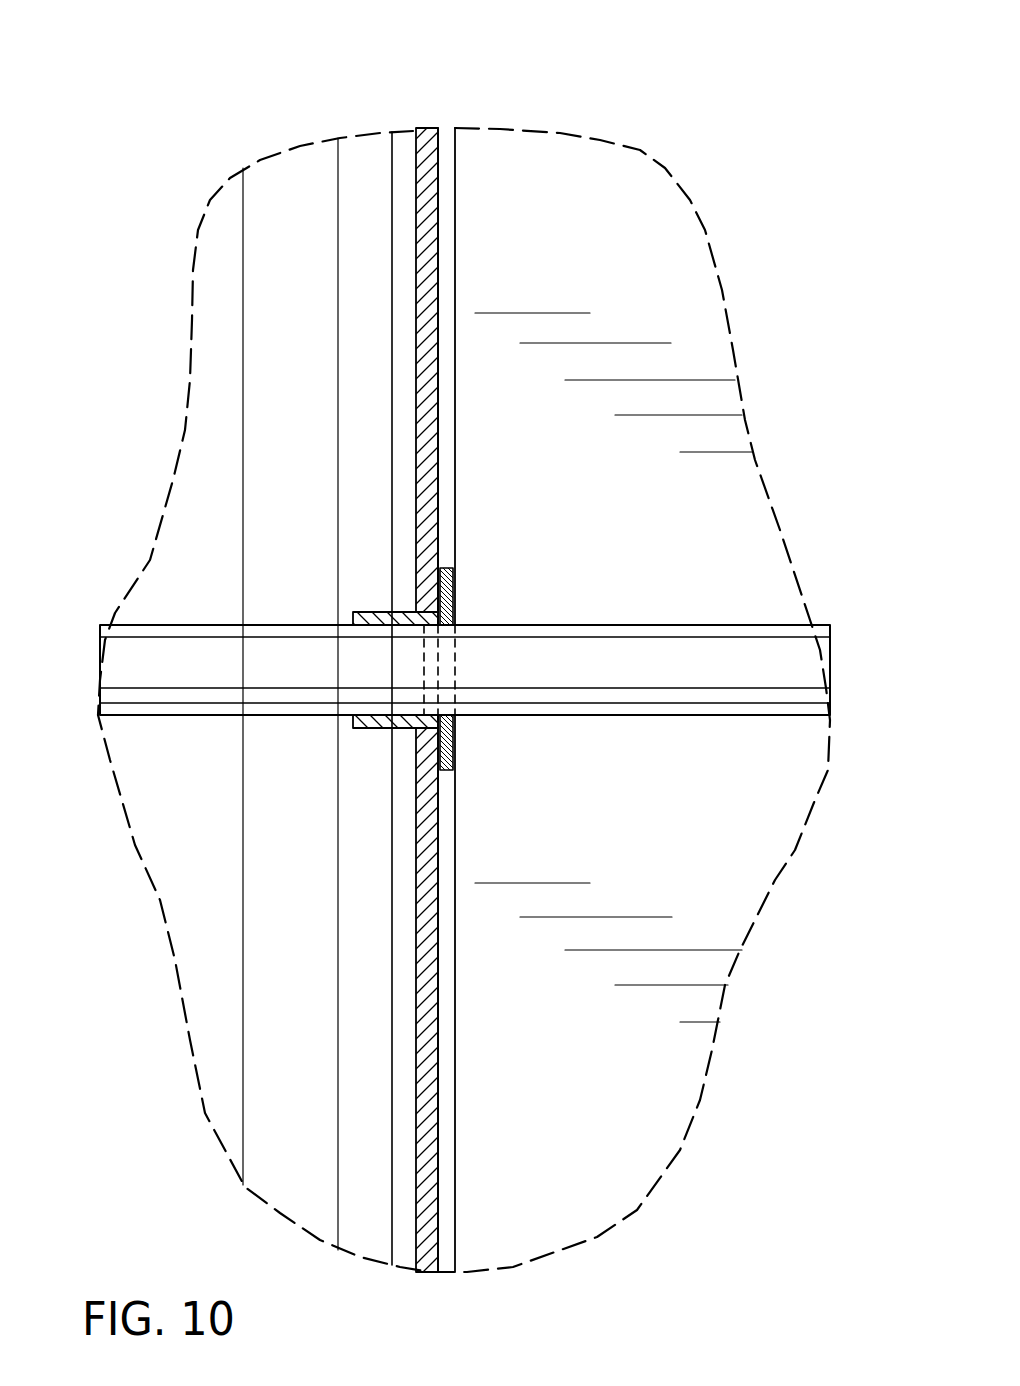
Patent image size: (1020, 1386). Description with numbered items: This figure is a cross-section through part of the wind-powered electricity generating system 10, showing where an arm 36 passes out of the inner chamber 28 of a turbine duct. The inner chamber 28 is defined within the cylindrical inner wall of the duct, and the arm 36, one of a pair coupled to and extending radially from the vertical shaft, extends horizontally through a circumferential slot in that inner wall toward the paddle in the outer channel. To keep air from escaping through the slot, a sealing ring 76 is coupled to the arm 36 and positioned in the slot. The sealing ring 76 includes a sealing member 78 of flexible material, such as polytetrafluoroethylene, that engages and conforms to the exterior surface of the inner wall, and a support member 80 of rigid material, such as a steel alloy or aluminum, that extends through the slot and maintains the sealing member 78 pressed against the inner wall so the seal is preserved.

The wind-powered electricity generating system 10 is at (665, 107).
The inner chamber 28 is at (362, 430).
The arm 36 is at (650, 703).
The sealing ring 76 is at (490, 577).
The sealing member 78 is at (456, 600).
The support member 80 is at (370, 727).